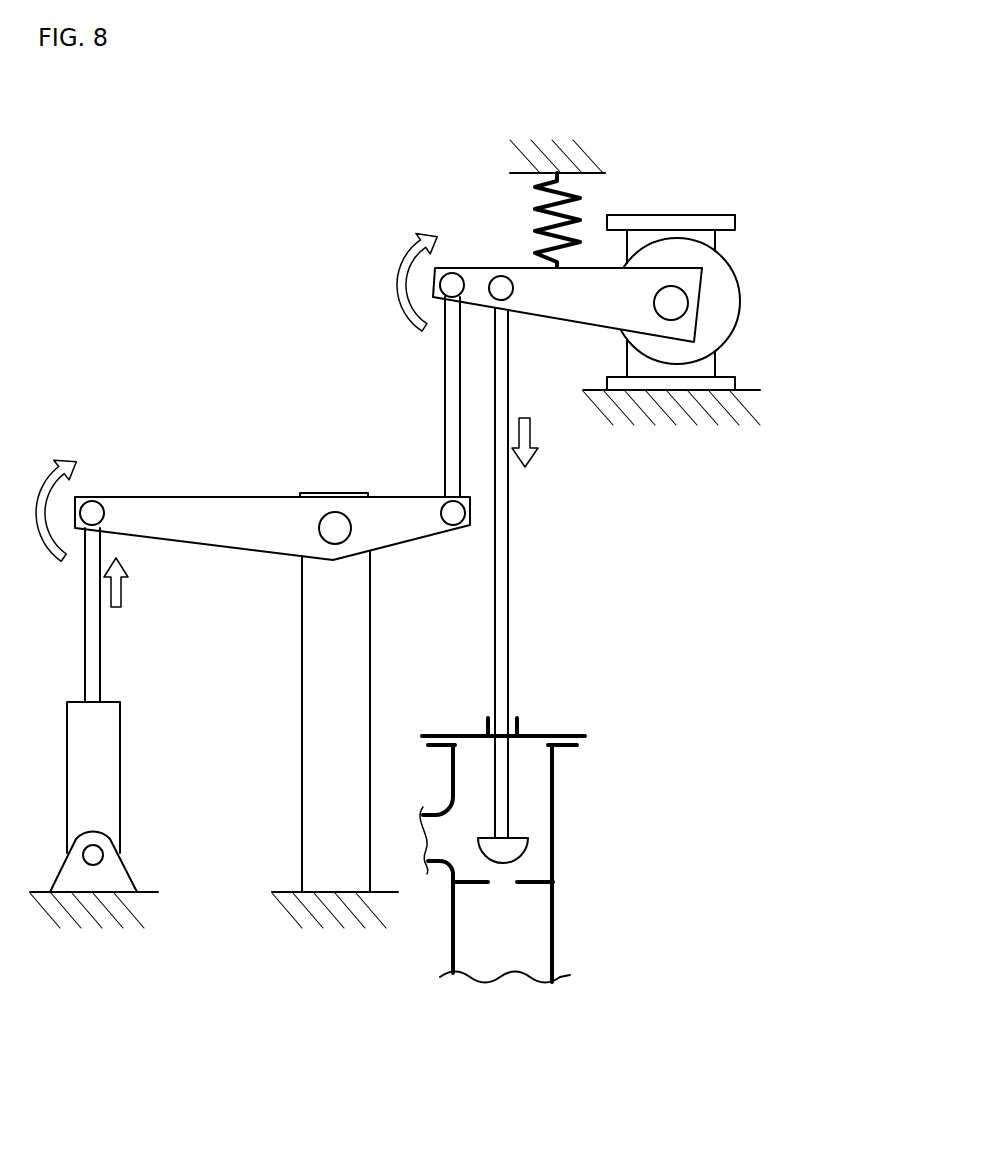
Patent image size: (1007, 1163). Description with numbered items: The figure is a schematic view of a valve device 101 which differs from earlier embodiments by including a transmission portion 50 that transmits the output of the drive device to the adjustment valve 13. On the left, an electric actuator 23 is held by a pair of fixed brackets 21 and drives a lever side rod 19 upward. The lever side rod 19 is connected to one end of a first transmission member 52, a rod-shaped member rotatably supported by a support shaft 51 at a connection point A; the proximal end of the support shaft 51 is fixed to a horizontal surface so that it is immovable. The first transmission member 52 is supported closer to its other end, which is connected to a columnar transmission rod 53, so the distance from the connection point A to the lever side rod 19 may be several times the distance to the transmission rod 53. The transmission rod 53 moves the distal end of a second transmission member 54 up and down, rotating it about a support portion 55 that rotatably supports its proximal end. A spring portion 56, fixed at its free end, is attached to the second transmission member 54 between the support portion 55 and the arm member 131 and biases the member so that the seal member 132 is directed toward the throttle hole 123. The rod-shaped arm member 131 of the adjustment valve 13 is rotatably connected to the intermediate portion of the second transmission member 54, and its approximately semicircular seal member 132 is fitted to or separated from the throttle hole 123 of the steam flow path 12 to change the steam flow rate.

The valve device 101 is at (130, 204).
The steam flow path 12 is at (558, 792).
The throttle hole 123 is at (490, 882).
The adjustment valve 13 is at (511, 608).
The arm member 131 is at (505, 537).
The seal member 132 is at (507, 850).
The lever side rod 19 is at (92, 633).
The brackets 21 is at (115, 882).
The electric actuator 23 is at (108, 763).
The transmission portion 50 is at (385, 494).
The support shaft 51 is at (360, 663).
The first transmission member 52 is at (202, 520).
The transmission rod 53 is at (448, 360).
The second transmission member 54 is at (547, 304).
The support portion 55 is at (718, 303).
The spring portion 56 is at (577, 198).
The connection point A is at (337, 518).